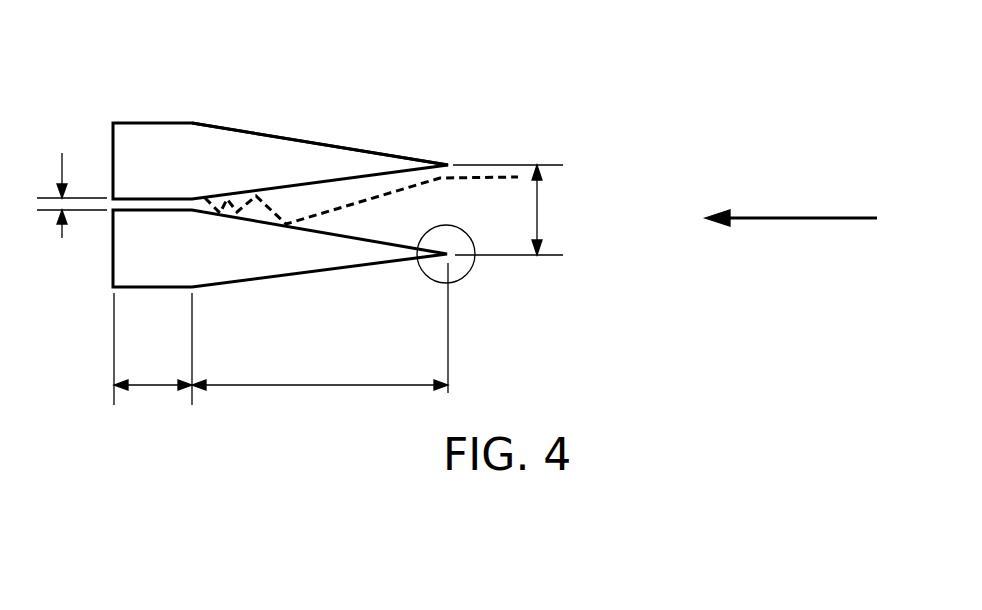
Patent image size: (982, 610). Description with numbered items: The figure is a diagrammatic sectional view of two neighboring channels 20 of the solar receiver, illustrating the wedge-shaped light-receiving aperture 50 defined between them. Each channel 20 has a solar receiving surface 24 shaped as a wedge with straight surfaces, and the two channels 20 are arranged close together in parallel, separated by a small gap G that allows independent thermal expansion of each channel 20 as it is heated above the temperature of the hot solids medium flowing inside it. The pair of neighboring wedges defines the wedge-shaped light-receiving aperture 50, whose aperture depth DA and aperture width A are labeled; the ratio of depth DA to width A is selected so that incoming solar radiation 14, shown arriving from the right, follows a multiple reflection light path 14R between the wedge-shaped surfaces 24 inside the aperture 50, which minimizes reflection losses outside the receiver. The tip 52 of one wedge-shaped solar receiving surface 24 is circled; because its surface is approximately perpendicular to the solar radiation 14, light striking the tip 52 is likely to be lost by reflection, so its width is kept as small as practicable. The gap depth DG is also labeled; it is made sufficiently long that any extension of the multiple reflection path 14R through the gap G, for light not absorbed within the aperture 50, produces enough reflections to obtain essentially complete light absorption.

The channel 20 is at (157, 123).
The solar receiving surface 24 is at (306, 132).
The solar radiation 14 is at (772, 218).
The multiple reflection light path 14R is at (473, 178).
The wedge-shaped light-receiving aperture 50 is at (407, 220).
The tip 52 is at (460, 282).
The gap G is at (72, 182).
The gap depth DG is at (158, 385).
The aperture depth DA is at (312, 385).
The aperture width A is at (537, 202).